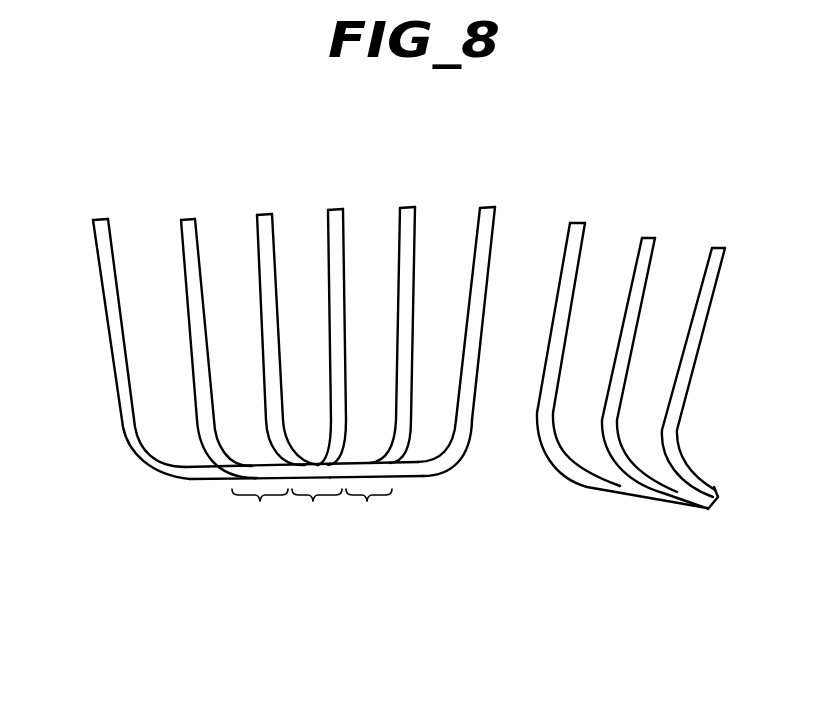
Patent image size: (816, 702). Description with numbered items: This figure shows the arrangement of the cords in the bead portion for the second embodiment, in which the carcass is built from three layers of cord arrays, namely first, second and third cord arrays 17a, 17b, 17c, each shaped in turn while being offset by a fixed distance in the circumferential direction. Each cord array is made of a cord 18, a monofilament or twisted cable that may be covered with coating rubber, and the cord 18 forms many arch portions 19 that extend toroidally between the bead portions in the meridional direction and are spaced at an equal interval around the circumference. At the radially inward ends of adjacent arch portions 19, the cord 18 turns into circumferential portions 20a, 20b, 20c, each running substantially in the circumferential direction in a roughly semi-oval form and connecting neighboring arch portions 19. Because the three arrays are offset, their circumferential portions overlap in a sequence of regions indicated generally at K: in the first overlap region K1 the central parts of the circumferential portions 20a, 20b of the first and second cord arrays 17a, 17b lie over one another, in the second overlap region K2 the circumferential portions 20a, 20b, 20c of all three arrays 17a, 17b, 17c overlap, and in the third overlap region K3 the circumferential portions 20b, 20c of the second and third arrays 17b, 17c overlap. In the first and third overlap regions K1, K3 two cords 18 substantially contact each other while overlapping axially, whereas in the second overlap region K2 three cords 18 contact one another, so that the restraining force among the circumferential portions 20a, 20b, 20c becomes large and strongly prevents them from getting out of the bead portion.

The first cord array 17a is at (108, 226).
The second cord array 17b is at (195, 226).
The third cord array 17c is at (273, 225).
The cord 18 is at (343, 220).
The arch portion 19 is at (414, 220).
The circumferential portion of first cord array 20a is at (168, 474).
The circumferential portion of second cord array 20b is at (236, 467).
The circumferential portion of third cord array 20c is at (423, 465).
The pitch arrangement of tube bottoms K is at (226, 500).
The first overlap region K1 is at (260, 515).
The second overlap region K2 is at (317, 515).
The third overlap region K3 is at (369, 515).